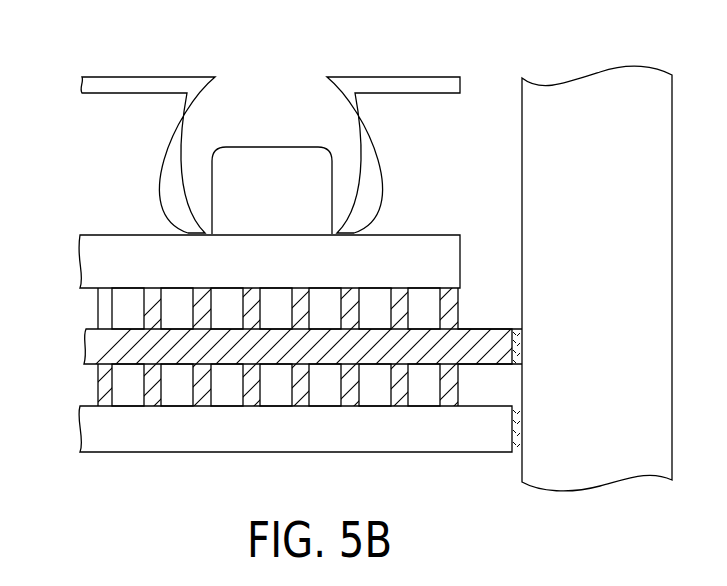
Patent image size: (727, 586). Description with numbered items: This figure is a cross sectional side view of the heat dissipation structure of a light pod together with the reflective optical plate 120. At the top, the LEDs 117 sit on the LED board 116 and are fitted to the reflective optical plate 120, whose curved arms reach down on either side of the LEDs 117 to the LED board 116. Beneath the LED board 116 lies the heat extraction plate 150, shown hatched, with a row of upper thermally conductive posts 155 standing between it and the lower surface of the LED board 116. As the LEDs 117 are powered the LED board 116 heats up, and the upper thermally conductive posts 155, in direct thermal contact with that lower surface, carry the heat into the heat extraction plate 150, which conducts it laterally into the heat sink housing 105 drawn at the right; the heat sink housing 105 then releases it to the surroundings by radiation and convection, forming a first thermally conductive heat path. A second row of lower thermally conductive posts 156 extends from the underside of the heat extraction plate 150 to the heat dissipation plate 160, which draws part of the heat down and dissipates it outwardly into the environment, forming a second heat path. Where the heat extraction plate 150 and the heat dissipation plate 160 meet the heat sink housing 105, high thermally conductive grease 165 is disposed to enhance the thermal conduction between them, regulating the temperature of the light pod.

The heat sink housing 105 is at (615, 268).
The LED board 116 is at (130, 235).
The LEDs 117 is at (276, 147).
The reflective optical plate 120 is at (402, 77).
The heat extraction plate 150 is at (81, 329).
The upper thermally conductive posts 155 is at (98, 323).
The lower thermally conductive posts 156 is at (137, 403).
The heat dissipation plate 160 is at (422, 453).
The high thermally conductive grease 165 is at (522, 347).